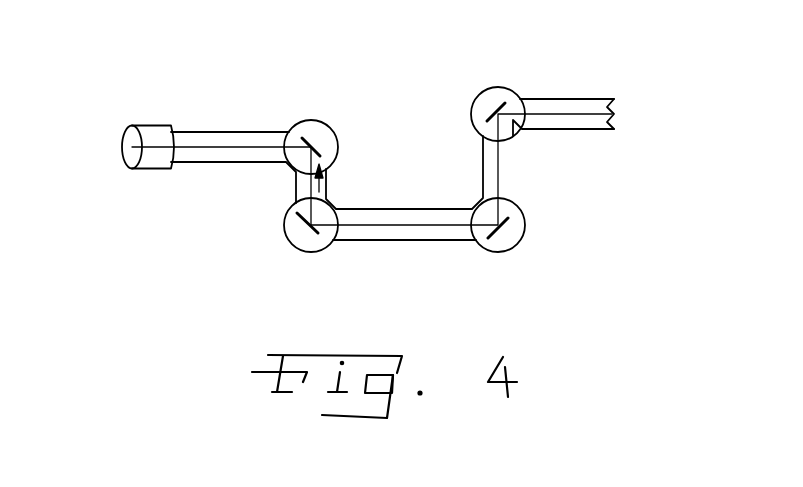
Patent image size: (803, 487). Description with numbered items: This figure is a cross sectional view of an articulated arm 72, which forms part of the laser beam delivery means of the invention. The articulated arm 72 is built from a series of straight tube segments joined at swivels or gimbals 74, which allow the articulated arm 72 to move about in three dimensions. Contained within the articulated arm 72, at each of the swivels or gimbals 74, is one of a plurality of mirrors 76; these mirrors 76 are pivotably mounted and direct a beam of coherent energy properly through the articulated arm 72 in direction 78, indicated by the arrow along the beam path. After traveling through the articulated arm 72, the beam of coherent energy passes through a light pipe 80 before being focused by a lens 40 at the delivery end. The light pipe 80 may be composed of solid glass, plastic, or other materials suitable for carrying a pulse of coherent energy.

The lens 40 is at (132, 140).
The articulated arm 72 is at (555, 152).
The swivels or gimbals 74 is at (475, 97).
The mirrors 76 is at (499, 98).
The direction 78 is at (320, 193).
The light pipe 80 is at (160, 157).